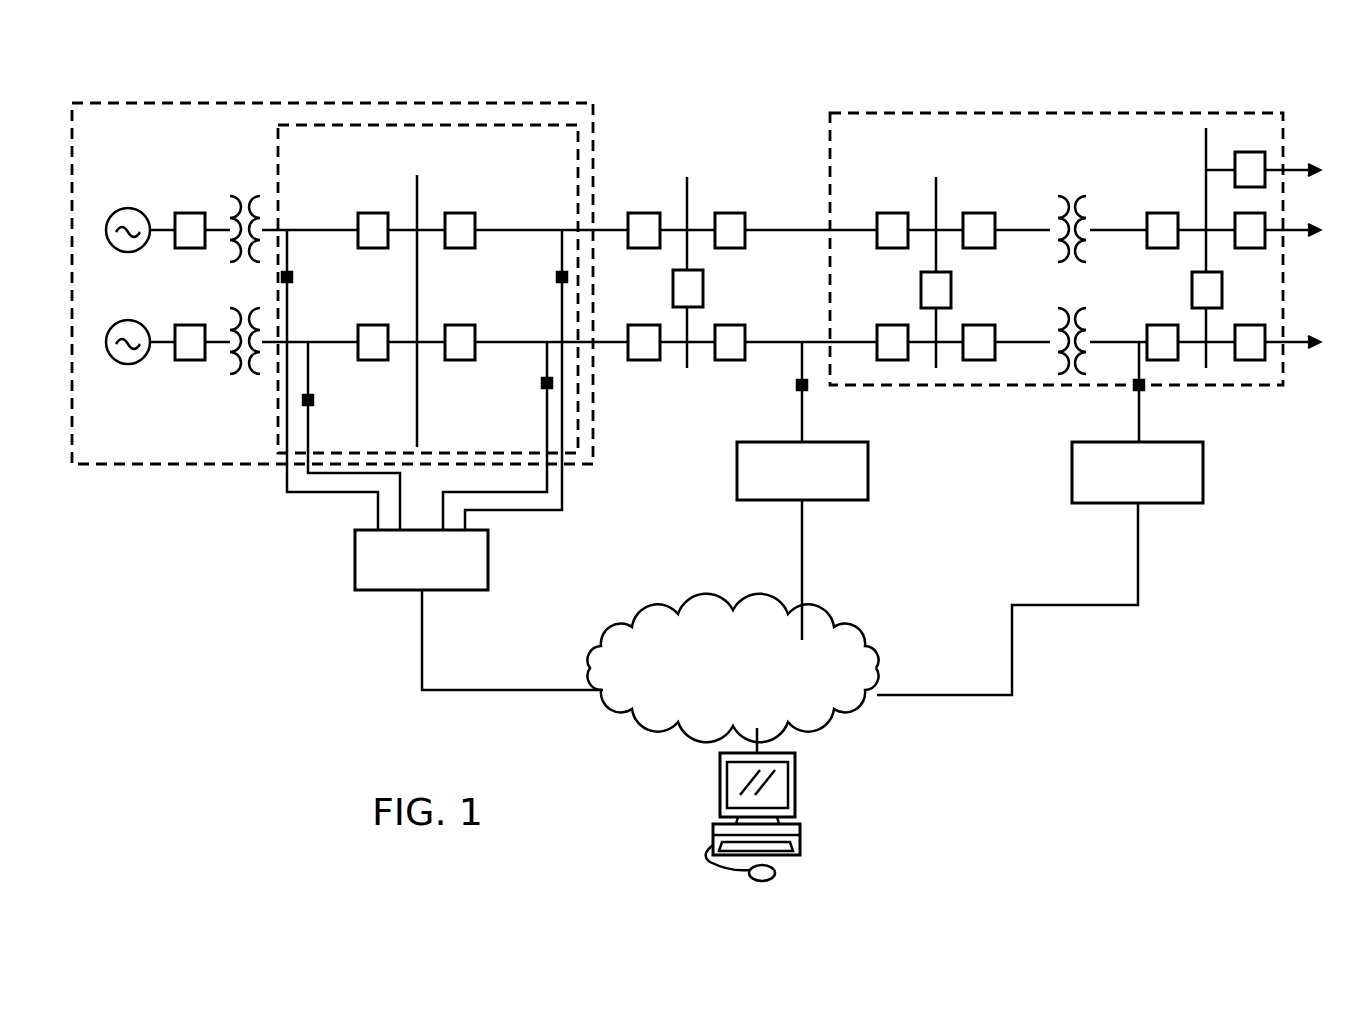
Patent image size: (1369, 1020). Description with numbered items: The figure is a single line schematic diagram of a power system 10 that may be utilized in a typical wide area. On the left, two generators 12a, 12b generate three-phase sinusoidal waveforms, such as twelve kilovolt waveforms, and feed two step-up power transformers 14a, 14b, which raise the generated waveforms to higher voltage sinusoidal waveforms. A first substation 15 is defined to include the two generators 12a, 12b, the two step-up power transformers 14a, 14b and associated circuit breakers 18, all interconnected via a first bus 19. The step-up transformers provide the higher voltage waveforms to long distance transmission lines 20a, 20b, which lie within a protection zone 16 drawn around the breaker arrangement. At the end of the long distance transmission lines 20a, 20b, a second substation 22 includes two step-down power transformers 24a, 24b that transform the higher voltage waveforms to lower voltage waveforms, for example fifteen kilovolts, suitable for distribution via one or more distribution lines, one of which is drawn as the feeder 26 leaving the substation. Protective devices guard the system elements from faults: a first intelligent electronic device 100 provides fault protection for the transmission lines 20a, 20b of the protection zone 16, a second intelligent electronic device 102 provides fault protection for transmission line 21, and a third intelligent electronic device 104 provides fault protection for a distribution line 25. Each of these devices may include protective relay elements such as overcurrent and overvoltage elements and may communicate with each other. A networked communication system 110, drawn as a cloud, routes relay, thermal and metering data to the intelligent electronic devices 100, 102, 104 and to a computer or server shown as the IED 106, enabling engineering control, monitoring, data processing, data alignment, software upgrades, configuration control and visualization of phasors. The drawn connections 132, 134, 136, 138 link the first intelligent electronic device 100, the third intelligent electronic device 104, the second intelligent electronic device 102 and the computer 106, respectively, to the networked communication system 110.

The power system 10 is at (758, 129).
The generator 12a is at (112, 268).
The generator 12b is at (122, 364).
The step-up power transformer 14a is at (245, 190).
The step-up power transformer 14b is at (245, 380).
The first substation 15 is at (310, 103).
The protection zone 16 is at (593, 178).
The circuit breaker 18 is at (456, 250).
The first bus 19 is at (415, 186).
The transmission line 20a is at (610, 230).
The transmission line 20b is at (612, 345).
The transmission line 21 is at (805, 340).
The second substation 22 is at (1110, 113).
The step-down power transformer 24a is at (1085, 190).
The step-down power transformer 24b is at (1085, 308).
The distribution line 25 is at (1139, 342).
The feeder 26 is at (1298, 174).
The first intelligent electronic device 100 is at (355, 558).
The second intelligent electronic device 102 is at (737, 468).
The third intelligent electronic device 104 is at (1072, 468).
The computer/server IED 106 is at (798, 783).
The networked communication system 110 is at (610, 635).
The communication link 132 is at (473, 692).
The communication link 134 is at (1013, 655).
The communication link 136 is at (806, 583).
The communication link 138 is at (764, 740).